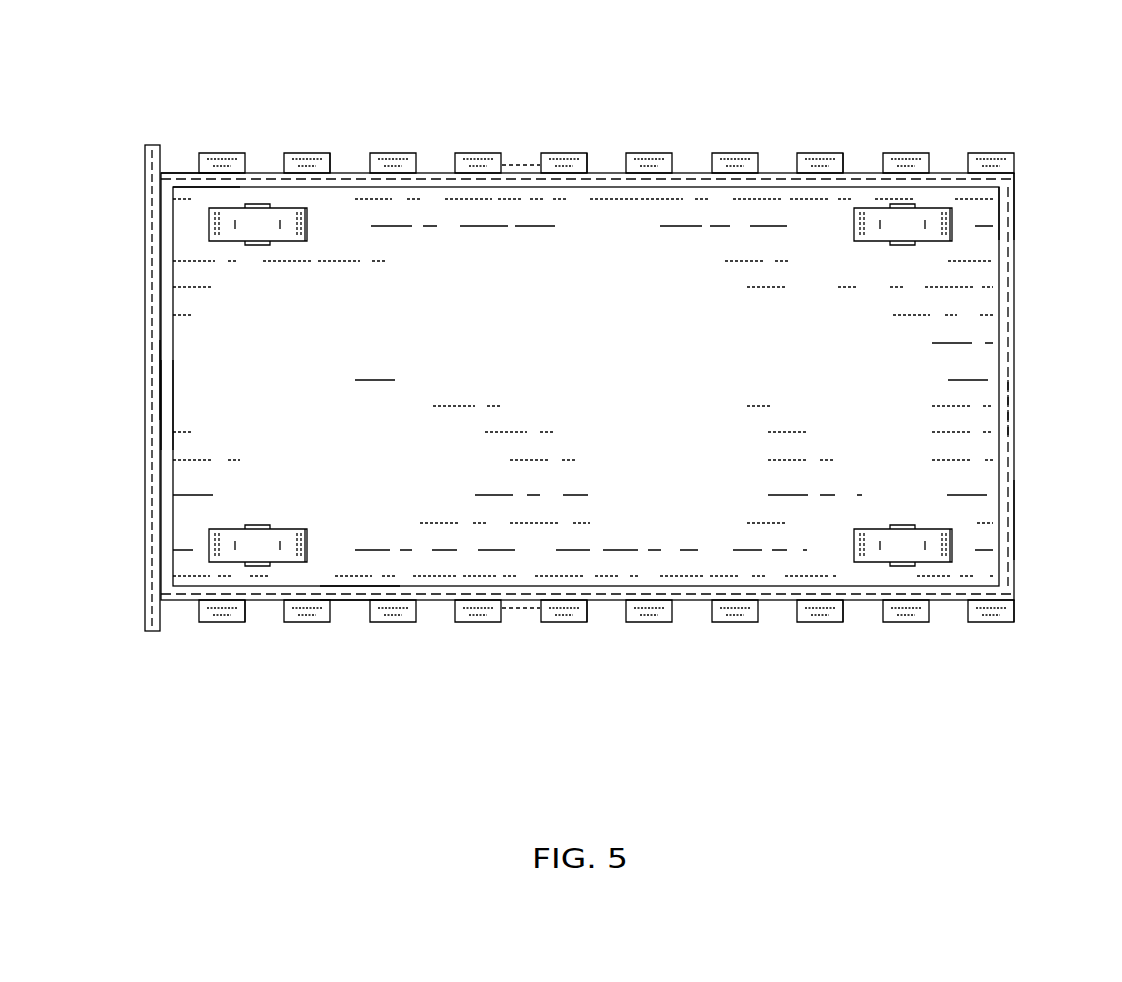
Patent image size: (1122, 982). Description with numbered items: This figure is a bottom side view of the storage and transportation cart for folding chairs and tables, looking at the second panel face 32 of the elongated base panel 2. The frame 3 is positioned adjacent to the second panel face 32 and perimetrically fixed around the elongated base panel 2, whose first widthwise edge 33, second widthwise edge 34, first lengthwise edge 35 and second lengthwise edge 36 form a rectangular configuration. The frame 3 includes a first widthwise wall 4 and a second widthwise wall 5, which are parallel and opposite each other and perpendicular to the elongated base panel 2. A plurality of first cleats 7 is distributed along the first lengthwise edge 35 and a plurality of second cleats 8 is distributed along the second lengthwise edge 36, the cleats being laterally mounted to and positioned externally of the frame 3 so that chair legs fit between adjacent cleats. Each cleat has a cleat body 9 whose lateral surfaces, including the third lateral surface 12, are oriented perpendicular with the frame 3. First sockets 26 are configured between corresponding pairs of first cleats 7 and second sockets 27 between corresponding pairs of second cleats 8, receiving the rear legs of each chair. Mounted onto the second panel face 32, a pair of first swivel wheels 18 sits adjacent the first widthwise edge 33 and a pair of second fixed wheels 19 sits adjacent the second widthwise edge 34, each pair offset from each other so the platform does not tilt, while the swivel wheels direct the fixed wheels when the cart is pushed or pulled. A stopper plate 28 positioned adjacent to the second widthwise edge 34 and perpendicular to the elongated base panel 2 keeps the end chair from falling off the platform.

The elongated base panel 2 is at (996, 302).
The frame 3 is at (1013, 410).
The first widthwise wall 4 is at (1011, 512).
The second widthwise wall 5 is at (167, 408).
The first cleats 7 is at (306, 148).
The second cleats 8 is at (207, 628).
The cleat body 9 is at (327, 151).
The third lateral surface 12 is at (579, 168).
The first swivel wheels 18 is at (862, 243).
The second fixed wheels 19 is at (300, 243).
The first sockets 26 is at (530, 172).
The second sockets 27 is at (531, 601).
The stopper plate 28 is at (148, 170).
The second panel face 32 is at (596, 381).
The first widthwise edge 33 is at (1011, 236).
The second widthwise edge 34 is at (160, 380).
The first lengthwise edge 35 is at (182, 172).
The second lengthwise edge 36 is at (355, 603).